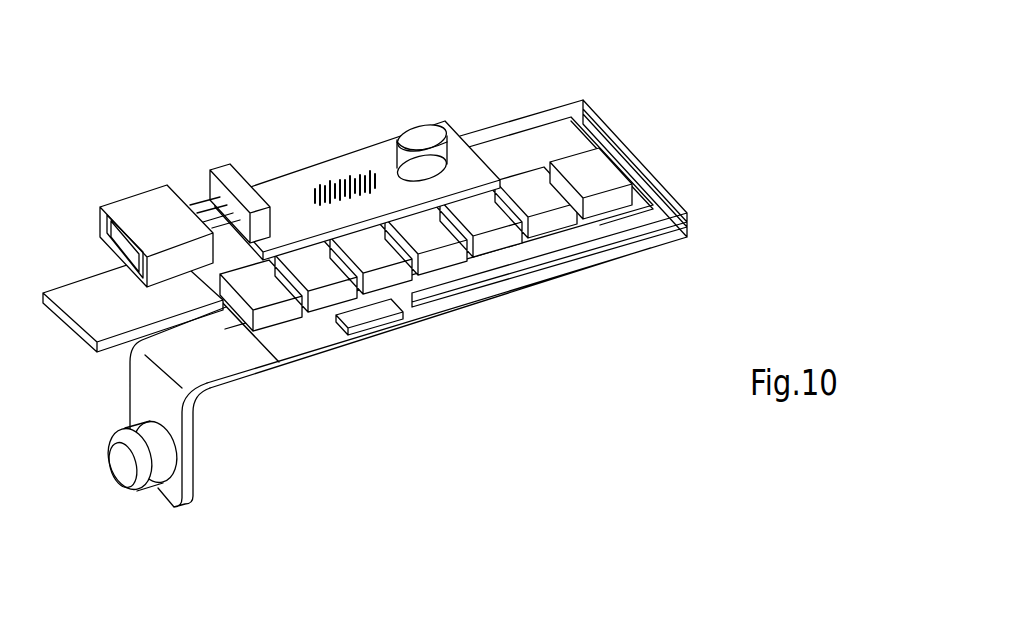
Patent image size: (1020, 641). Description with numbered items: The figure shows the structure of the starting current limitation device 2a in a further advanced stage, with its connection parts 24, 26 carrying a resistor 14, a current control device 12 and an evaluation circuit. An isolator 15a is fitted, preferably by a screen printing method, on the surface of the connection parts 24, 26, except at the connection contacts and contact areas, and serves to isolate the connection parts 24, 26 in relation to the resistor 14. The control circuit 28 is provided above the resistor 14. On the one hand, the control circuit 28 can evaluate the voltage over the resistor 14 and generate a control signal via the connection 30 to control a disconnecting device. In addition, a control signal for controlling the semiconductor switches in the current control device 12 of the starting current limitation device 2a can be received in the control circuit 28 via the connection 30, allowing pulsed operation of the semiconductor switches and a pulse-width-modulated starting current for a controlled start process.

The starting current limitation device 2a is at (633, 87).
The current control device 12 is at (603, 172).
The resistor 14 is at (364, 313).
The isolator 15a is at (297, 338).
The connection part 24 is at (86, 289).
The connection part 26 is at (247, 380).
The control circuit 28 is at (292, 190).
The connection 30 is at (142, 209).